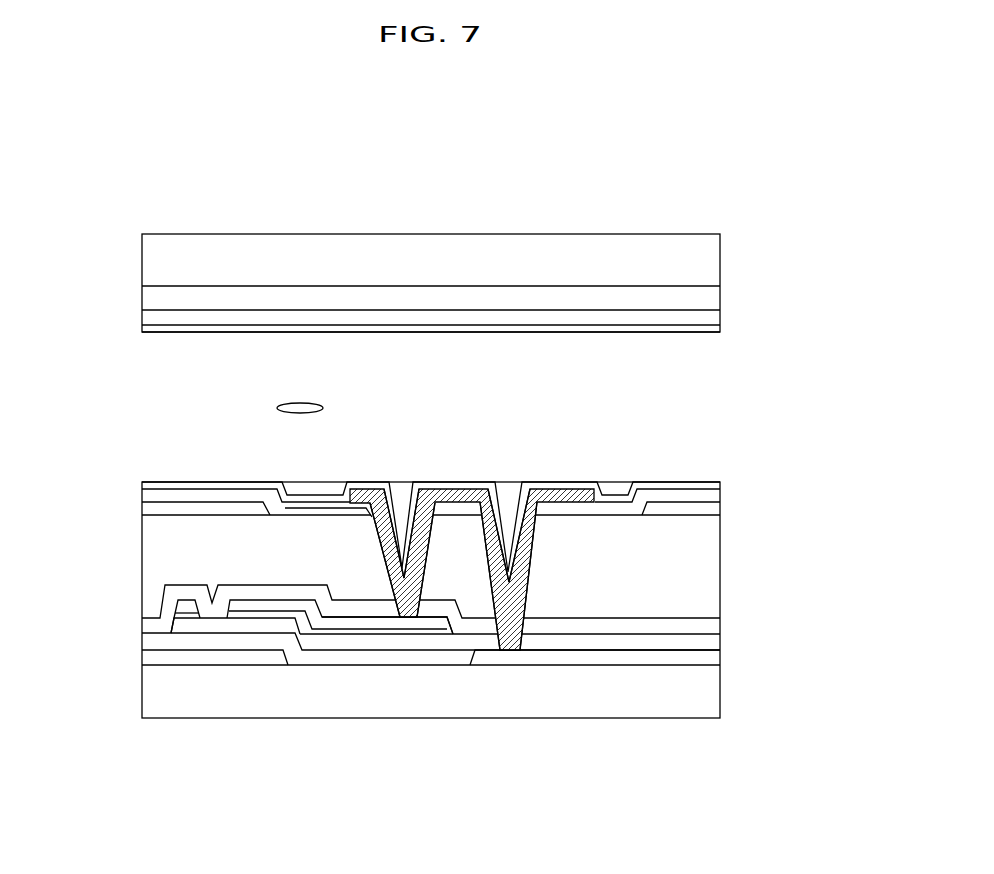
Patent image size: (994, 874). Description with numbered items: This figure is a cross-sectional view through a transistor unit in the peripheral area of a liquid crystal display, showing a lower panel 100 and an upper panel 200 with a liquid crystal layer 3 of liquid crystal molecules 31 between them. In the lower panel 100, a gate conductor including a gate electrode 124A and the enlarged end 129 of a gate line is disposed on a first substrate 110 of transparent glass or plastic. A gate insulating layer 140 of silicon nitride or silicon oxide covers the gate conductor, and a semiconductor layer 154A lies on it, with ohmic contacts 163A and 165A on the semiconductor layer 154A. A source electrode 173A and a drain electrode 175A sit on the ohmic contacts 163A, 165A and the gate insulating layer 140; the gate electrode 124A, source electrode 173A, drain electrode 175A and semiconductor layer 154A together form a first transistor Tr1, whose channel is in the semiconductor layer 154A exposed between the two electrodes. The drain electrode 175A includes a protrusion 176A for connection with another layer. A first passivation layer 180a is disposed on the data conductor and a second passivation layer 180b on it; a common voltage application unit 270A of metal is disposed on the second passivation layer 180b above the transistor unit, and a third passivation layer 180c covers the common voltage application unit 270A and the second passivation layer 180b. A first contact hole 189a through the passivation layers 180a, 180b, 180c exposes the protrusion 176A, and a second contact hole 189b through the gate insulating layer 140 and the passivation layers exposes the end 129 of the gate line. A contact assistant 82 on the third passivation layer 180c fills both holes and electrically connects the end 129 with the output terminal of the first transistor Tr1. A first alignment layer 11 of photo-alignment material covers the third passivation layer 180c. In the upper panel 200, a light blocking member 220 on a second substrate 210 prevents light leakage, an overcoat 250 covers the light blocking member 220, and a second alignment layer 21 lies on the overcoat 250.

The upper panel 200 is at (737, 234).
The second substrate 210 is at (377, 262).
The light blocking member 220 is at (481, 298).
The overcoat 250 is at (596, 317).
The second alignment layer 21 is at (175, 333).
The liquid crystal layer 3 is at (737, 343).
The liquid crystal molecules 31 is at (306, 404).
The lower panel 100 is at (737, 490).
The first substrate 110 is at (460, 700).
The gate electrode 124A is at (252, 657).
The end of the gate line 129 is at (523, 660).
The gate insulating layer 140 is at (360, 658).
The semiconductor layer 154A is at (211, 624).
The ohmic contact 163A is at (186, 619).
The ohmic contact 165A is at (307, 627).
The source electrode 173A is at (185, 609).
The drain electrode 175A is at (268, 607).
The protrusion 176A is at (418, 622).
The first passivation layer 180a is at (633, 627).
The second passivation layer 180b is at (680, 582).
The third passivation layer 180c is at (692, 495).
The common voltage application unit 270A is at (172, 506).
The first alignment layer 11 is at (212, 488).
The contact assistant 82 is at (452, 486).
The first contact hole 189a is at (378, 536).
The second contact hole 189b is at (532, 535).
The first transistor Tr1 is at (216, 572).